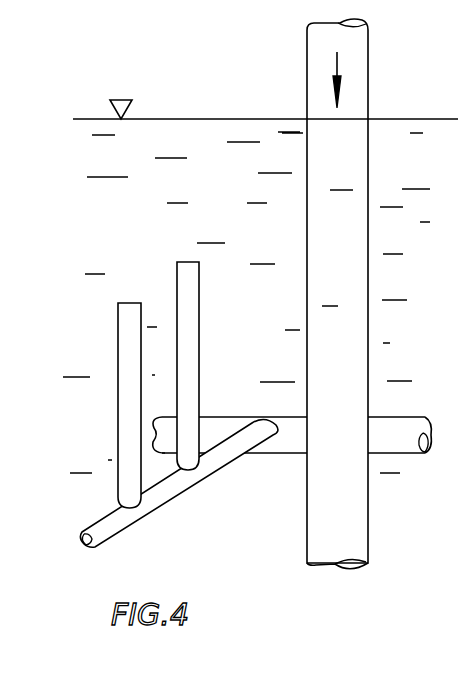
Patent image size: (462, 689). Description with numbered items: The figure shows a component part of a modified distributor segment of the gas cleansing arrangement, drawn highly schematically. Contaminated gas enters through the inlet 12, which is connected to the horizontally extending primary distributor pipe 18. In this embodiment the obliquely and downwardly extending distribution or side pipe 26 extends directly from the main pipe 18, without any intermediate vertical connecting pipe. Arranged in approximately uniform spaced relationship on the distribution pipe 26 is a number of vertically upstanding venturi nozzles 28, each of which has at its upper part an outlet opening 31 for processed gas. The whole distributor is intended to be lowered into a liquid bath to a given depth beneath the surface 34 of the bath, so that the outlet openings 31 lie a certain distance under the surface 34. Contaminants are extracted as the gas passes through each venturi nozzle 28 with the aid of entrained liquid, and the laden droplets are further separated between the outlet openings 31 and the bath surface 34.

The inlet 12 is at (362, 49).
The primary distributor pipe 18 is at (242, 410).
The distribution pipe 26 is at (227, 455).
The venturi nozzle 28 is at (127, 352).
The outlet opening 31 is at (119, 352).
The surface of the liquid bath 34 is at (206, 119).